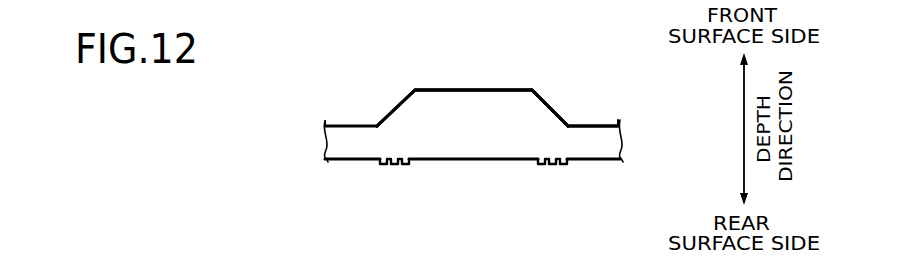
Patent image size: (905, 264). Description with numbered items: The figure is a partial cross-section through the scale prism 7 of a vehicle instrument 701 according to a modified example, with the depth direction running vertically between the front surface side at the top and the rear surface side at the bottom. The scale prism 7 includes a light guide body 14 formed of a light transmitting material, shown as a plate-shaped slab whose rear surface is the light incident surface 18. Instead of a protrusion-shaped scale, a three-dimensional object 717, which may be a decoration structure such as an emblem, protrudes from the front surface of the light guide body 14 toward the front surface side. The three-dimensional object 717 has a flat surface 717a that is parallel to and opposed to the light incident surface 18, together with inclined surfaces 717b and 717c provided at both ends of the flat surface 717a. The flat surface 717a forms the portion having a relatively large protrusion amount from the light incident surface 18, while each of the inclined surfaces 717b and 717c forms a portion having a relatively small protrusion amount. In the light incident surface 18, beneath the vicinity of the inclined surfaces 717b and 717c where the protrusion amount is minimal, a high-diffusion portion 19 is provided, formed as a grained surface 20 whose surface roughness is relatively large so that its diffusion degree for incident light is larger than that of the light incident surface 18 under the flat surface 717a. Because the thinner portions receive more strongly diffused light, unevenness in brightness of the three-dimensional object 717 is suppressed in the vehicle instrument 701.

The scale prism 7 is at (640, 59).
The light guide body 14 is at (602, 116).
The light incident surface 18 is at (475, 172).
The high-diffusion portion 19 is at (400, 173).
The grained surface 20 is at (557, 173).
The vehicle instrument 701 is at (426, 75).
The three-dimensional object 717 is at (540, 113).
The flat surface 717a is at (477, 90).
The inclined surface 717b is at (388, 119).
The inclined surface 717c is at (557, 119).